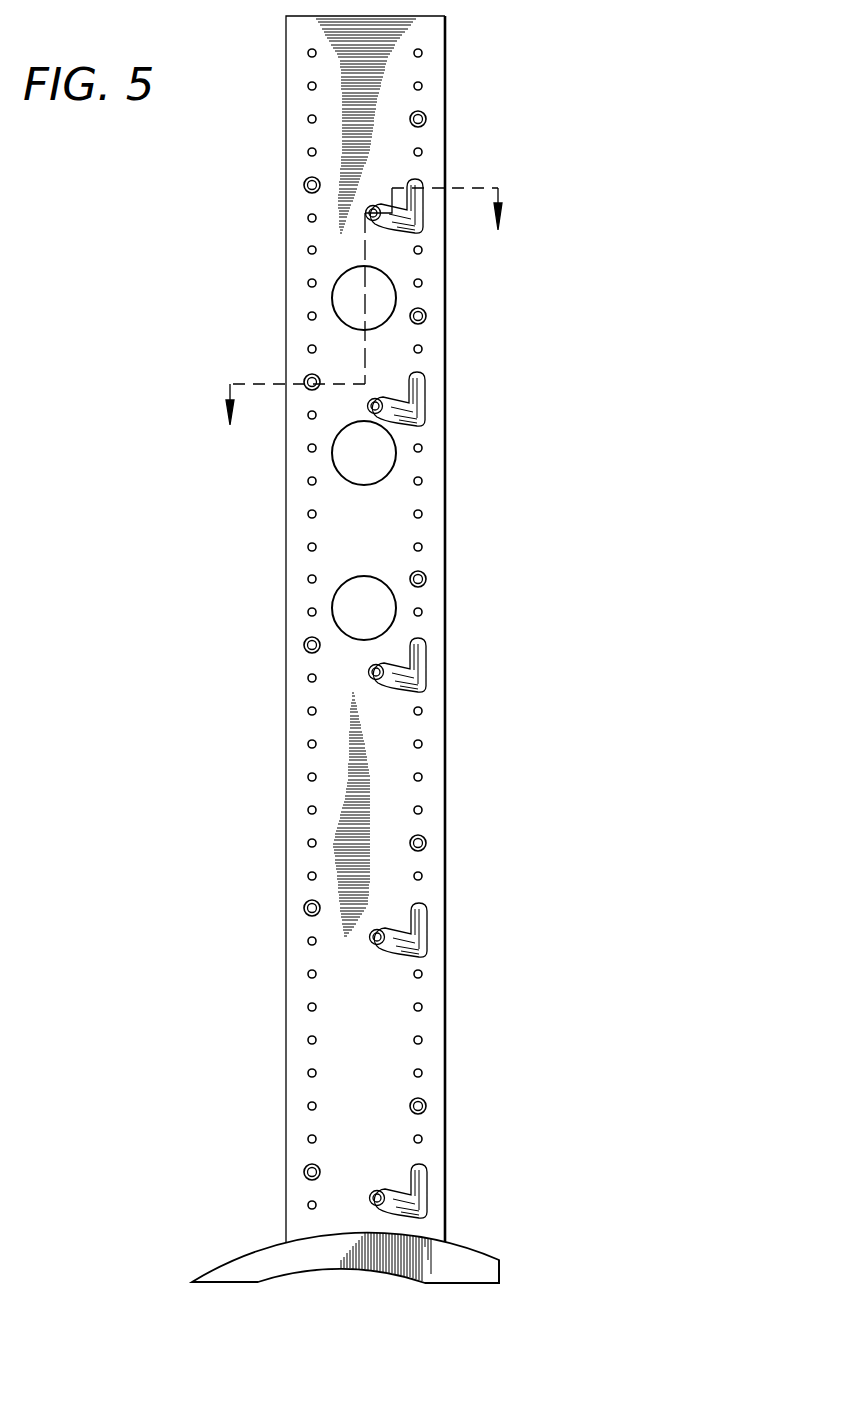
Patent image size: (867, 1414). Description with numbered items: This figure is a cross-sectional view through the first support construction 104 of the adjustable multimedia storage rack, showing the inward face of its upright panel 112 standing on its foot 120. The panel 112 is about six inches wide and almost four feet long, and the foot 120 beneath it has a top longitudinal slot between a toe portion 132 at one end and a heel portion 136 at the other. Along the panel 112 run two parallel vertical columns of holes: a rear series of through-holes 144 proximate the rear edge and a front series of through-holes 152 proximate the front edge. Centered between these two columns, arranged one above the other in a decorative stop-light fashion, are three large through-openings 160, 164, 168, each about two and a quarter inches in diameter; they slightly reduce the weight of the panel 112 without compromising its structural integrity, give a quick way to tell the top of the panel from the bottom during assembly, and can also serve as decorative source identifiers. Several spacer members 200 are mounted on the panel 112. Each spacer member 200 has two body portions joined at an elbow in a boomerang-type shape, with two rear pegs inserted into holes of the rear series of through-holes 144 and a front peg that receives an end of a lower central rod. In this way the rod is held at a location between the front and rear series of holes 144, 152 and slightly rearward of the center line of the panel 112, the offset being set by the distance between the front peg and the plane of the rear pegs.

The first support construction 104 is at (500, 526).
The upright panel 112 is at (427, 698).
The foot 120 is at (315, 1260).
The toe portion 132 is at (230, 1260).
The heel portion 136 is at (483, 1268).
The rear series of through-holes 144 is at (418, 481).
The front series of through-holes 152 is at (312, 548).
The large through-opening 160 is at (343, 298).
The large through-opening 164 is at (348, 458).
The large through-opening 168 is at (355, 608).
The spacer member 200 is at (423, 907).